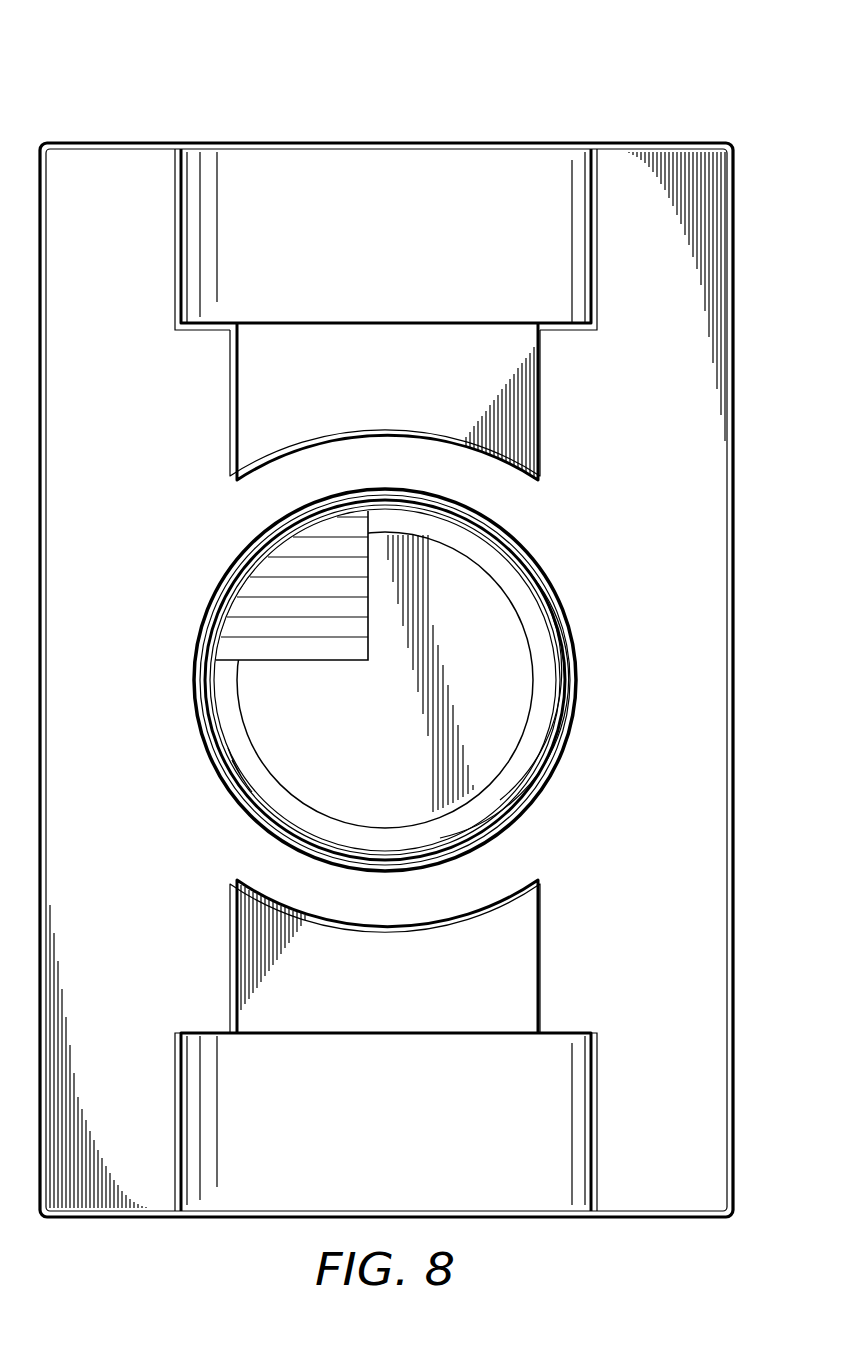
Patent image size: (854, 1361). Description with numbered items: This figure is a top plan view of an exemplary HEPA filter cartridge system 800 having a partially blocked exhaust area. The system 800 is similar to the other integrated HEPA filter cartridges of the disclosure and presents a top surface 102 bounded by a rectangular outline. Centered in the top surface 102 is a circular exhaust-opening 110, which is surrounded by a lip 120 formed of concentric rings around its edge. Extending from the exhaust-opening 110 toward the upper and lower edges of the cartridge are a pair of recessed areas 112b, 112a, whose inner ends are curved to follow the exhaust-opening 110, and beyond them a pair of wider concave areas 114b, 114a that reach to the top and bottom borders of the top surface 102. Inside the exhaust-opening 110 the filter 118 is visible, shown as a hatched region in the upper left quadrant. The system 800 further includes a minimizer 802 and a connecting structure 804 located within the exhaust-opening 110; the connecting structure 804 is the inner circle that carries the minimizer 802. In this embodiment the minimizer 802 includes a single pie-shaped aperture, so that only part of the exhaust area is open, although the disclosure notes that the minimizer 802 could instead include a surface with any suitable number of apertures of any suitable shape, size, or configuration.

The HEPA filter cartridge system 800 is at (244, 57).
The top surface 102 is at (670, 940).
The exhaust-opening 110 is at (561, 592).
The lip 120 is at (568, 648).
The filter 118 is at (270, 590).
The minimizer 802 is at (412, 708).
The connecting structure 804 is at (260, 767).
The recessed area 112a is at (421, 1003).
The recessed area 112b is at (421, 394).
The concave area 114a is at (421, 1137).
The concave area 114b is at (421, 258).